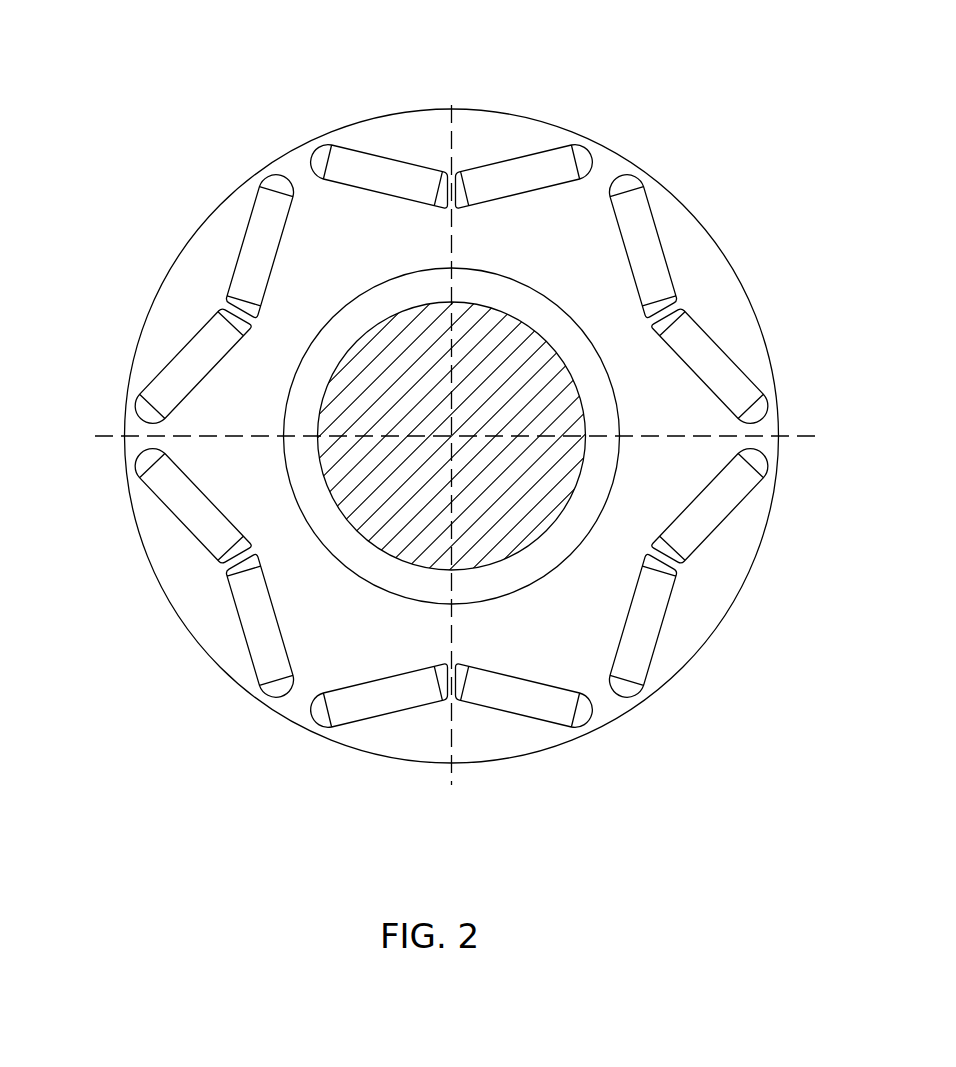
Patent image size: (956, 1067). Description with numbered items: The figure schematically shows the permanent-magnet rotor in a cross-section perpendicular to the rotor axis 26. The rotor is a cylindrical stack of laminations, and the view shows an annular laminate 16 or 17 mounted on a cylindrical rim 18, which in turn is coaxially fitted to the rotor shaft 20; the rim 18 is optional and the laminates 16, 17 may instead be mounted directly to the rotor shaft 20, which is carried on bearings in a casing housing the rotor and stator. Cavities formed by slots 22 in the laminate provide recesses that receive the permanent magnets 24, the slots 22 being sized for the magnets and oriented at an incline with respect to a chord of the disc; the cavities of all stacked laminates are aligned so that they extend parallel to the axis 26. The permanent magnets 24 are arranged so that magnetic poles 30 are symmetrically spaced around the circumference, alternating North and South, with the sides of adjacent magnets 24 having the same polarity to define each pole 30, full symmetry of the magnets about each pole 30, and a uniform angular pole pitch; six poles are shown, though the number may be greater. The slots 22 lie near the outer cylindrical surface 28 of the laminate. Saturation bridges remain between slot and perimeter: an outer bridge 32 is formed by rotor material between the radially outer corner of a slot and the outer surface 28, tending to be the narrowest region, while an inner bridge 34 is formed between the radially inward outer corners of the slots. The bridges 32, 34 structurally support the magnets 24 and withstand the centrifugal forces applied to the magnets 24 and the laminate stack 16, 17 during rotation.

The laminate 16 is at (465, 403).
The laminate 17 is at (465, 403).
The rim 18 is at (534, 306).
The rotor shaft 20 is at (390, 485).
The slot 22 is at (656, 216).
The permanent magnet 24 is at (712, 353).
The axis 26 is at (452, 436).
The outer cylindrical surface 28 is at (524, 116).
The magnetic pole 30 is at (443, 107).
The outer bridge 32 is at (315, 727).
The inner bridge 34 is at (453, 152).